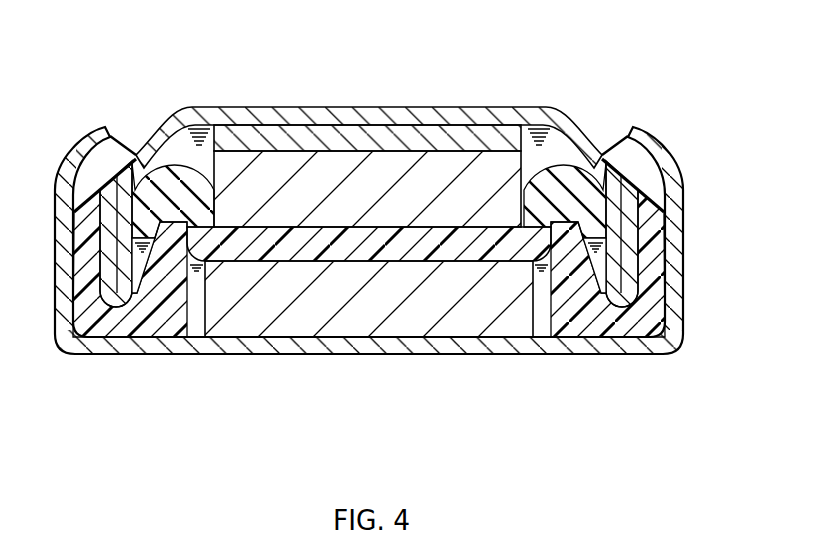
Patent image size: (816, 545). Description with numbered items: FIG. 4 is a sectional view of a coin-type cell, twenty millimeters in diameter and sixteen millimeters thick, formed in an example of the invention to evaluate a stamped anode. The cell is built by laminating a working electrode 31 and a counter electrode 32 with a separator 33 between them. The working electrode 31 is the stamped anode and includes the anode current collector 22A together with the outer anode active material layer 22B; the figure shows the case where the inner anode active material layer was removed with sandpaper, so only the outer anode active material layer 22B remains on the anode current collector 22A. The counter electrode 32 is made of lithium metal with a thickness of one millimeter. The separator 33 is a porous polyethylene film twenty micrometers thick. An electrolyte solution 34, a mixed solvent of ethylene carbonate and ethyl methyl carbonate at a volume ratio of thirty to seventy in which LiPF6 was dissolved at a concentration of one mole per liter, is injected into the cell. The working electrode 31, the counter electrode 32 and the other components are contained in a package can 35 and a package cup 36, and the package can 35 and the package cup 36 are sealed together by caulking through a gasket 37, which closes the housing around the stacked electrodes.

The working electrode 31 is at (483, 48).
The anode current collector 22A is at (407, 132).
The outer anode active material layer 22B is at (462, 175).
The counter electrode 32 is at (417, 327).
The separator 33 is at (551, 187).
The electrolyte solution 34 is at (195, 133).
The package can 35 is at (313, 343).
The package cup 36 is at (308, 118).
The gasket 37 is at (153, 327).